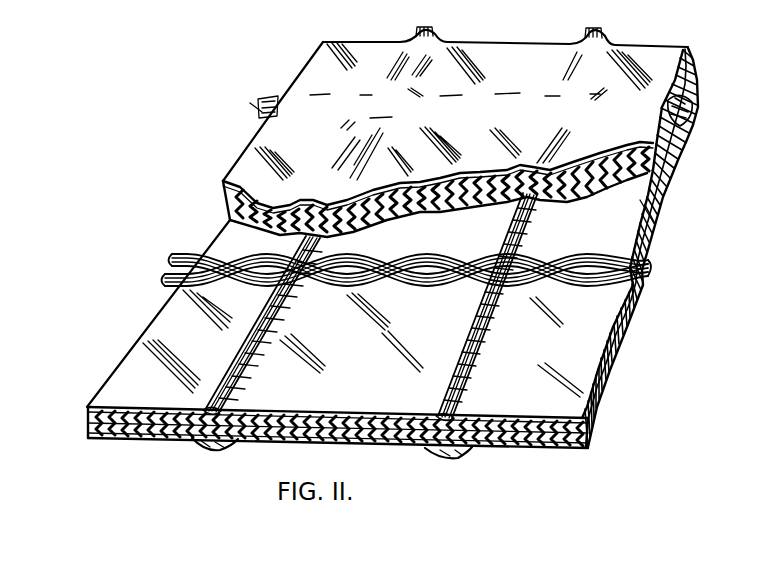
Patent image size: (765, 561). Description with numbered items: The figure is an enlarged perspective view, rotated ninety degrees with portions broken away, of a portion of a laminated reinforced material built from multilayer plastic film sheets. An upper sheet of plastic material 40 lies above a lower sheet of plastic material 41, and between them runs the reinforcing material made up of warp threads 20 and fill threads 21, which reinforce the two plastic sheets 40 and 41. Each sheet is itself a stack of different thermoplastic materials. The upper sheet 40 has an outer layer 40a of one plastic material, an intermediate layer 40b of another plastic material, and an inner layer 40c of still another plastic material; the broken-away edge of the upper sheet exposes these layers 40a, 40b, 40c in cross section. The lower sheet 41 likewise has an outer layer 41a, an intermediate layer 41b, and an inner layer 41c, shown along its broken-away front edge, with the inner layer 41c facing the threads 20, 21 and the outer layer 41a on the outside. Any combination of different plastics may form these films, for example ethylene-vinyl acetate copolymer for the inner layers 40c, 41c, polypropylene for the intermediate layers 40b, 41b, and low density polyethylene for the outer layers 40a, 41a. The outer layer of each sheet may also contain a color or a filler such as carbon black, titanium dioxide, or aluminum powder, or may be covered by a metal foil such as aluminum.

The upper sheet of plastic material 40 is at (518, 50).
The outer layer 40a is at (316, 72).
The intermediate layer 40b is at (231, 203).
The inner layer 40c is at (232, 211).
The warp threads 20 is at (183, 253).
The fill threads 21 is at (246, 372).
The lower sheet of plastic material 41 is at (118, 377).
The outer layer 41a is at (89, 436).
The intermediate layer 41b is at (87, 418).
The inner layer 41c is at (88, 410).